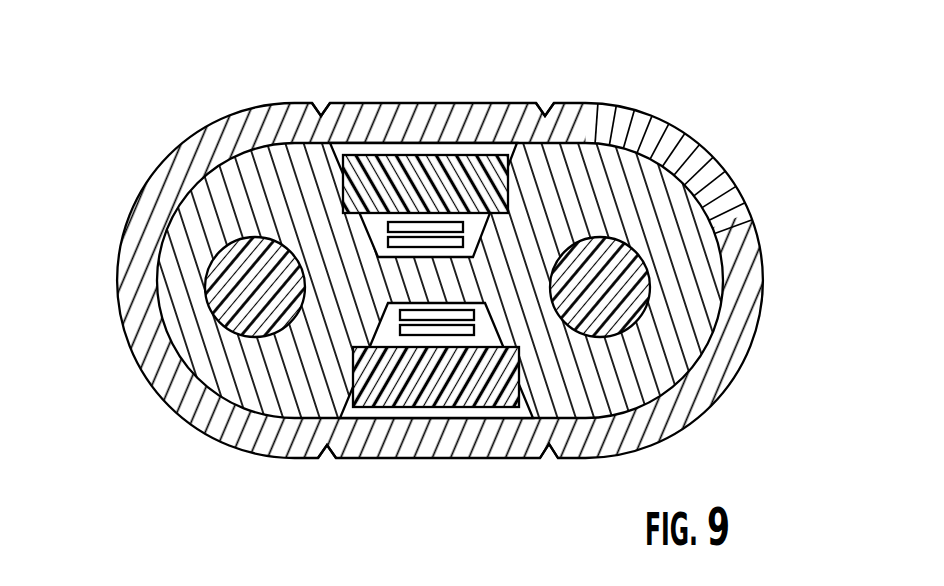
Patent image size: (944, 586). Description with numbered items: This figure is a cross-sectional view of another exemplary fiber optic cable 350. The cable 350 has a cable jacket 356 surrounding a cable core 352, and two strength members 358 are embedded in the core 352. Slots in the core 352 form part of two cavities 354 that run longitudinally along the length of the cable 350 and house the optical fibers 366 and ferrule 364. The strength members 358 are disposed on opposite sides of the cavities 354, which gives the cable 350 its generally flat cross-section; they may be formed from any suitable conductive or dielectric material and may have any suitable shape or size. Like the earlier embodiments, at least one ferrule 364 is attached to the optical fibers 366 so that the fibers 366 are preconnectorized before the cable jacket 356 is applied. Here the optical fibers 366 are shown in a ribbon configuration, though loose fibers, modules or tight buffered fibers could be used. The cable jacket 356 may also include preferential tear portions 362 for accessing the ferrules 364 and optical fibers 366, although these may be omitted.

The cable 350 is at (446, 266).
The cable core 352 is at (683, 344).
The cavities 354 is at (477, 143).
The cable jacket 356 is at (740, 265).
The strength members 358 is at (228, 306).
The preferential tear portions 362 is at (324, 101).
The ferrule 364 is at (467, 170).
The optical fibers 366 is at (473, 329).